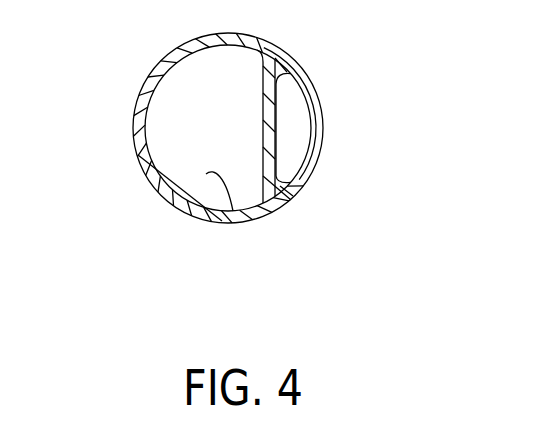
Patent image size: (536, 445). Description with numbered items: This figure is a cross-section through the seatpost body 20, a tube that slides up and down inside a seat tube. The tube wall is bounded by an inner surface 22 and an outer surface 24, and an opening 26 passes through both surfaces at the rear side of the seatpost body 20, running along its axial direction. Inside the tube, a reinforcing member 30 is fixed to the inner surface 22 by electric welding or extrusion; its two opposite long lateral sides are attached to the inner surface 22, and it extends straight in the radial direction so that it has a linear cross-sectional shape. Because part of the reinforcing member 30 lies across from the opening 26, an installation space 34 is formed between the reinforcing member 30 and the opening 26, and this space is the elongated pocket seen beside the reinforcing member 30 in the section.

The seatpost body 20 is at (164, 60).
The inner surface 22 is at (206, 174).
The outer surface 24 is at (222, 221).
The opening 26 is at (352, 108).
The reinforcing member 30 is at (272, 136).
The installation space 34 is at (297, 112).